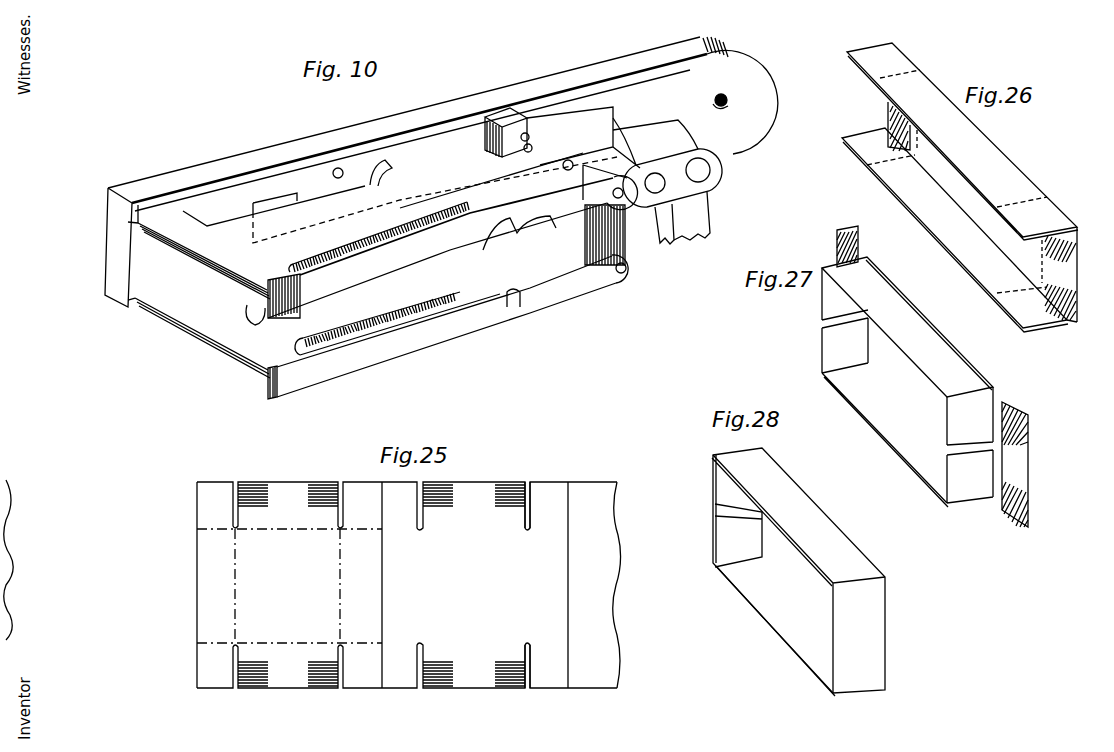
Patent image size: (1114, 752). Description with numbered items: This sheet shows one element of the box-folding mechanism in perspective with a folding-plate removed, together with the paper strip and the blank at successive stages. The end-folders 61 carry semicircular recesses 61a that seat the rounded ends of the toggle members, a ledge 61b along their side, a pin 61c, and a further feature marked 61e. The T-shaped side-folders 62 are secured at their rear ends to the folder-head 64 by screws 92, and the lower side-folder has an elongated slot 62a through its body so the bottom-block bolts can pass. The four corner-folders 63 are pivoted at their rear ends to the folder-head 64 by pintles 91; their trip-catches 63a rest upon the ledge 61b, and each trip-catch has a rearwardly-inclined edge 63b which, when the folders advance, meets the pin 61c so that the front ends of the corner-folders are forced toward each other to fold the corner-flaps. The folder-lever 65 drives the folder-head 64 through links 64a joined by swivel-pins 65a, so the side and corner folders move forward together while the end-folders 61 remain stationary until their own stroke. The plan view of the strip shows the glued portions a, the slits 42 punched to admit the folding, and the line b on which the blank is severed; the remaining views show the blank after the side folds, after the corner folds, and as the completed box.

In FIG. 10, the end-folders 61 is at (483, 92).
In FIG. 10, the semicircular recesses 61a is at (730, 103).
In FIG. 10, the ledge 61b is at (585, 112).
In FIG. 10, the pin 61c is at (336, 168).
In FIG. 10, the recess in rail 61e is at (367, 187).
In FIG. 10, the side-folders 62 is at (213, 255).
In FIG. 10, the elongated slot 62a is at (257, 313).
In FIG. 10, the corner-folders 63 is at (193, 197).
In FIG. 10, the trip-catches 63a is at (408, 163).
In FIG. 10, the rearwardly-inclined edge 63b is at (375, 170).
In FIG. 10, the folder-head 64 is at (620, 233).
In FIG. 10, the links 64a is at (635, 120).
In FIG. 10, the folder-lever 65 is at (702, 217).
In FIG. 10, the swivel-pins 65a is at (702, 172).
In FIG. 10, the pintles 91 is at (528, 132).
In FIG. 10, the screws 92 is at (564, 167).
In FIG. 25, the glued portions a is at (315, 480).
In FIG. 27, the glued portions a is at (1017, 432).
In FIG. 25, the severing line b is at (383, 577).
In FIG. 25, the slits 42 is at (528, 483).